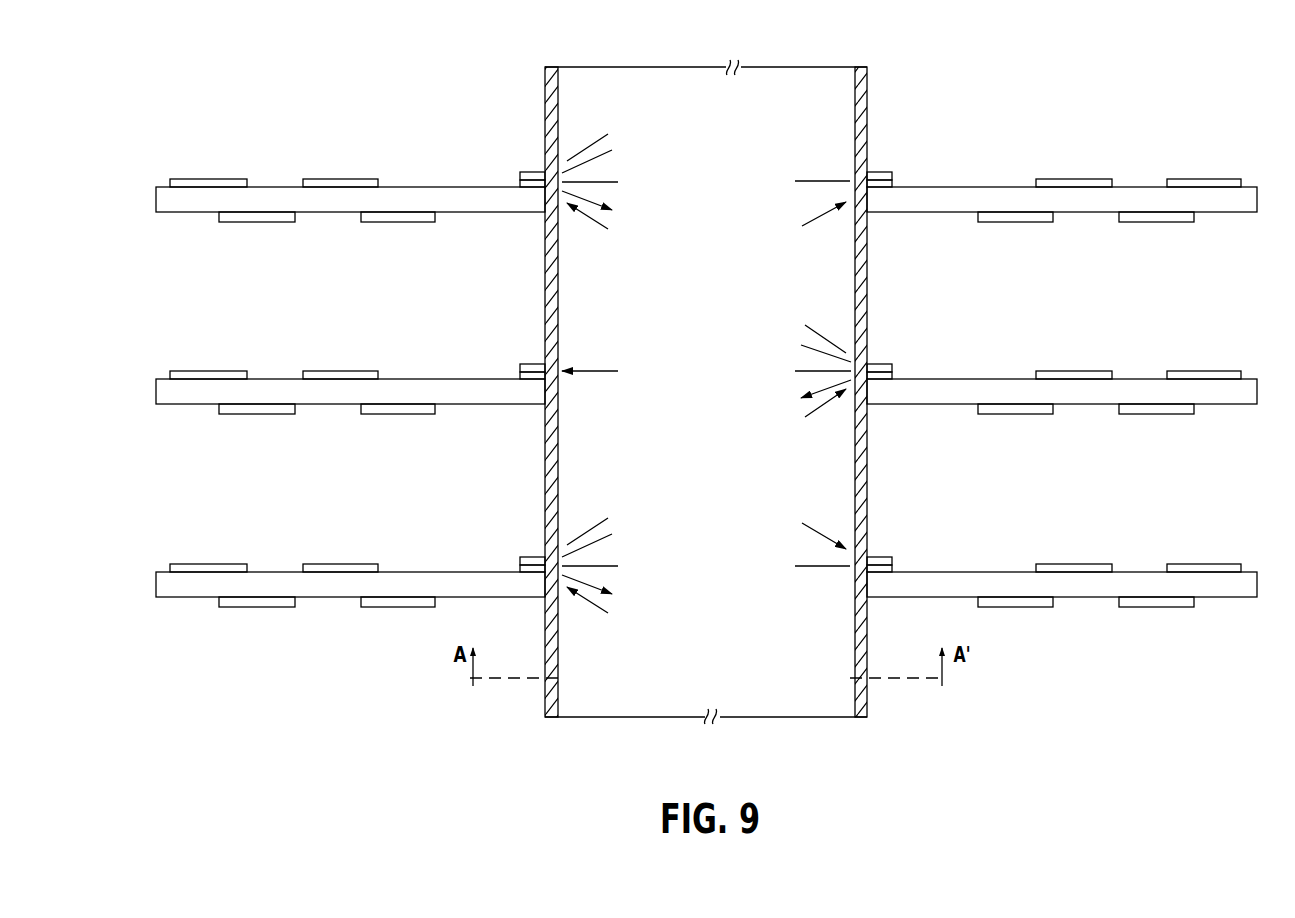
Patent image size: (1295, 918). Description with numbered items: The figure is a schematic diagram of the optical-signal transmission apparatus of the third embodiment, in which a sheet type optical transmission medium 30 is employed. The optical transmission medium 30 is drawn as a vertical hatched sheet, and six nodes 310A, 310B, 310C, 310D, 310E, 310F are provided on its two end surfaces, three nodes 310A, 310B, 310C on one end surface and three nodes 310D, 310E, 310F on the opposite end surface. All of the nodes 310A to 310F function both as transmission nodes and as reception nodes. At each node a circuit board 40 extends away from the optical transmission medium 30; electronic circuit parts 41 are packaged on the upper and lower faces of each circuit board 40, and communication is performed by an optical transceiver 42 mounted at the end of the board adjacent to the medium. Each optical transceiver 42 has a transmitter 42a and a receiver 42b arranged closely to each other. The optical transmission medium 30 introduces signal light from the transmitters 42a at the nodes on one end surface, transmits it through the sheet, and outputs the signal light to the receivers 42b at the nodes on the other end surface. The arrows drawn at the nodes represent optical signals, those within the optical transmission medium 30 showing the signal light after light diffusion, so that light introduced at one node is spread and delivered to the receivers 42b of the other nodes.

The optical transmission medium 30 is at (800, 66).
The circuit board 40 is at (182, 208).
The electronic circuit parts 41 is at (207, 180).
The optical transceiver 42 is at (706, 375).
The transmitter 42a is at (523, 173).
The receiver 42b is at (530, 186).
The node 310A is at (537, 168).
The node 310B is at (538, 358).
The node 310C is at (538, 552).
The node 310D is at (877, 168).
The node 310E is at (877, 358).
The node 310F is at (877, 552).